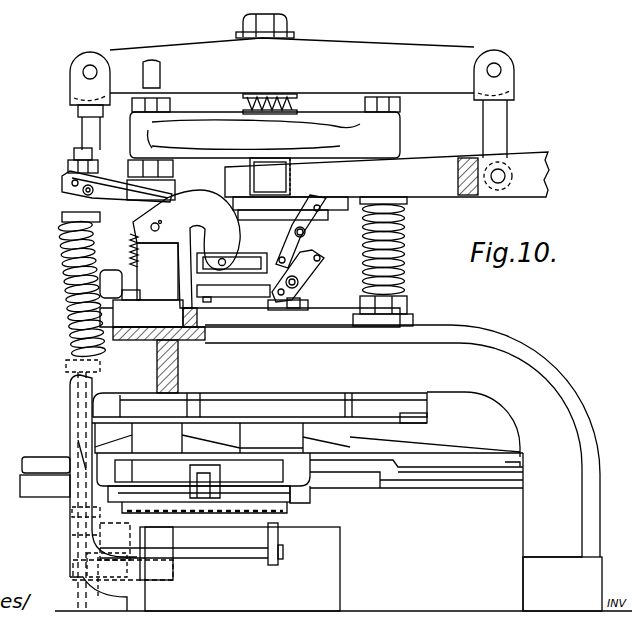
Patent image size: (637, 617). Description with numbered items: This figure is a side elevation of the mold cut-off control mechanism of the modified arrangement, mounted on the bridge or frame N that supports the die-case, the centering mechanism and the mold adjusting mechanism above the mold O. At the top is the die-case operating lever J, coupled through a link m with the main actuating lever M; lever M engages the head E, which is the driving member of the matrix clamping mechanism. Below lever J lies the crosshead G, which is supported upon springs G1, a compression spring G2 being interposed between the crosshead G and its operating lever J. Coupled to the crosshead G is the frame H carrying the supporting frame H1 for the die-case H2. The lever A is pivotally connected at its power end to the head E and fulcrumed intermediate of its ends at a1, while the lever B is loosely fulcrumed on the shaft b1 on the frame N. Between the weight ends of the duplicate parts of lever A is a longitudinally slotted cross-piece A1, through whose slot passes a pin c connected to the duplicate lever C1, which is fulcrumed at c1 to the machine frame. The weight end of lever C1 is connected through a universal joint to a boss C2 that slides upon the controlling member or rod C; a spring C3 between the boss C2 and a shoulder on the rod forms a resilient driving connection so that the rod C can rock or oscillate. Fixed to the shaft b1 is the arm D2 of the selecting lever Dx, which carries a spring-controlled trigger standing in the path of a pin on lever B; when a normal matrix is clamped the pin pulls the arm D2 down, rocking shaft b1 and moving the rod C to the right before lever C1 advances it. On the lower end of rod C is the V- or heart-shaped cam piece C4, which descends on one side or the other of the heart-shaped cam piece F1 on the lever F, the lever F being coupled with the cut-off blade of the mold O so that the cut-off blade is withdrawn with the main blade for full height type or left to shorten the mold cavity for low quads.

The die-case operating lever J is at (292, 82).
The link m is at (508, 128).
The compression spring G2 is at (300, 104).
The crosshead G is at (400, 132).
The lever A is at (387, 174).
The main actuating lever M is at (270, 176).
The driving member (head) E is at (290, 207).
The fulcrum of lever C1 c1 is at (160, 224).
The cam piece (head) C4 is at (65, 378).
The boss C2 is at (72, 200).
The duplicate lever C1 is at (64, 250).
The spring C3 is at (66, 290).
The springs G1 is at (408, 232).
The arm of lever Dx D2 is at (183, 247).
The pin c is at (227, 260).
The longitudinally slotted cross-piece A1 is at (280, 250).
The fulcrum of lever A a1 is at (305, 235).
The lever B is at (308, 273).
The pivot or shaft b1 is at (296, 286).
The bridge or frame N is at (403, 468).
The lever (designating or selecting member) Dx is at (72, 398).
The controlling member (rod) C is at (160, 436).
The frame H is at (413, 440).
The supporting frame H1 is at (370, 480).
The die-case H2 is at (290, 507).
The mold O is at (342, 558).
The lever F is at (234, 556).
The heart-shaped cam piece F1 is at (72, 537).